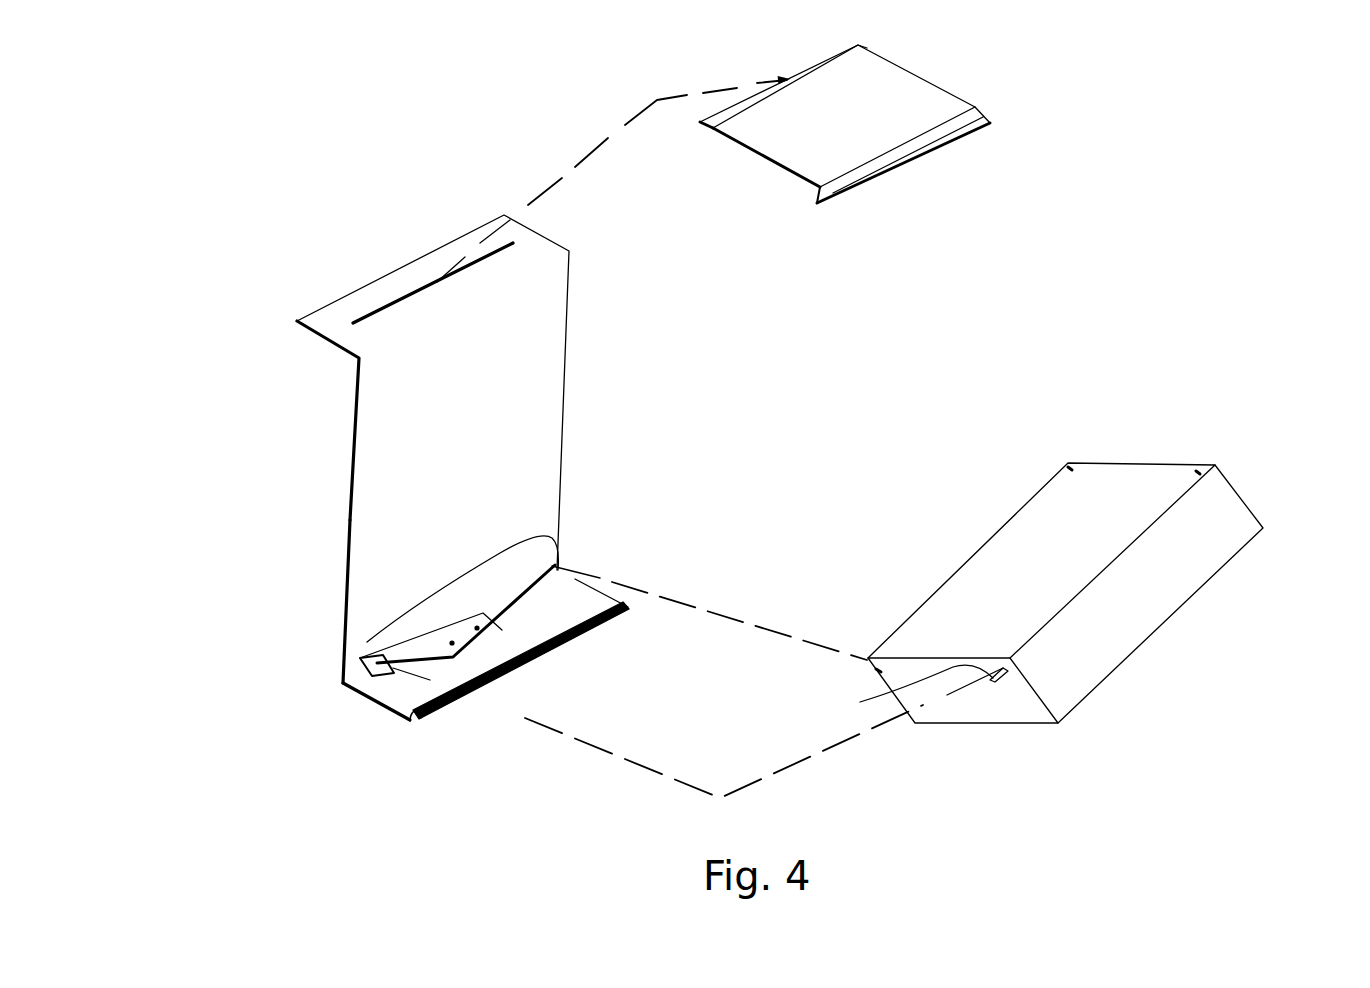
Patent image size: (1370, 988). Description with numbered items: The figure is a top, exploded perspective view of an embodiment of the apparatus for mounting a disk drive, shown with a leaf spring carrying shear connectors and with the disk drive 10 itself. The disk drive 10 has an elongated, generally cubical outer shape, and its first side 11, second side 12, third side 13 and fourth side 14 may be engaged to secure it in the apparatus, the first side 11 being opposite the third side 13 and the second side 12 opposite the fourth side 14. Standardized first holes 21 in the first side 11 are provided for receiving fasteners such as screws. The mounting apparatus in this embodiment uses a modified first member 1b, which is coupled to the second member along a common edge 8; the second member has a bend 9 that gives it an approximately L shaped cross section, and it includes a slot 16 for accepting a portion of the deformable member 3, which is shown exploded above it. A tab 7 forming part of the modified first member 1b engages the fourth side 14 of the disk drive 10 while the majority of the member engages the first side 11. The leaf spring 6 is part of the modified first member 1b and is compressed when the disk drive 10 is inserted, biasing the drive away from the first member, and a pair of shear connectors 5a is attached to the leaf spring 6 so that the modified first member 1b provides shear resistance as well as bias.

The deformable member 3 is at (847, 115).
The slot 16 is at (425, 287).
The bend 9 is at (358, 358).
The shear connectors 5a is at (373, 660).
The common edge 8 is at (342, 683).
The modified first member 1b is at (375, 702).
The tab 7 is at (413, 722).
The leaf spring 6 is at (463, 635).
The second side 12 is at (1047, 550).
The third side 13 is at (1224, 473).
The fourth side 14 is at (1172, 618).
The disk drive 10 is at (1052, 636).
The first holes 21 is at (878, 672).
The first side 11 is at (953, 700).